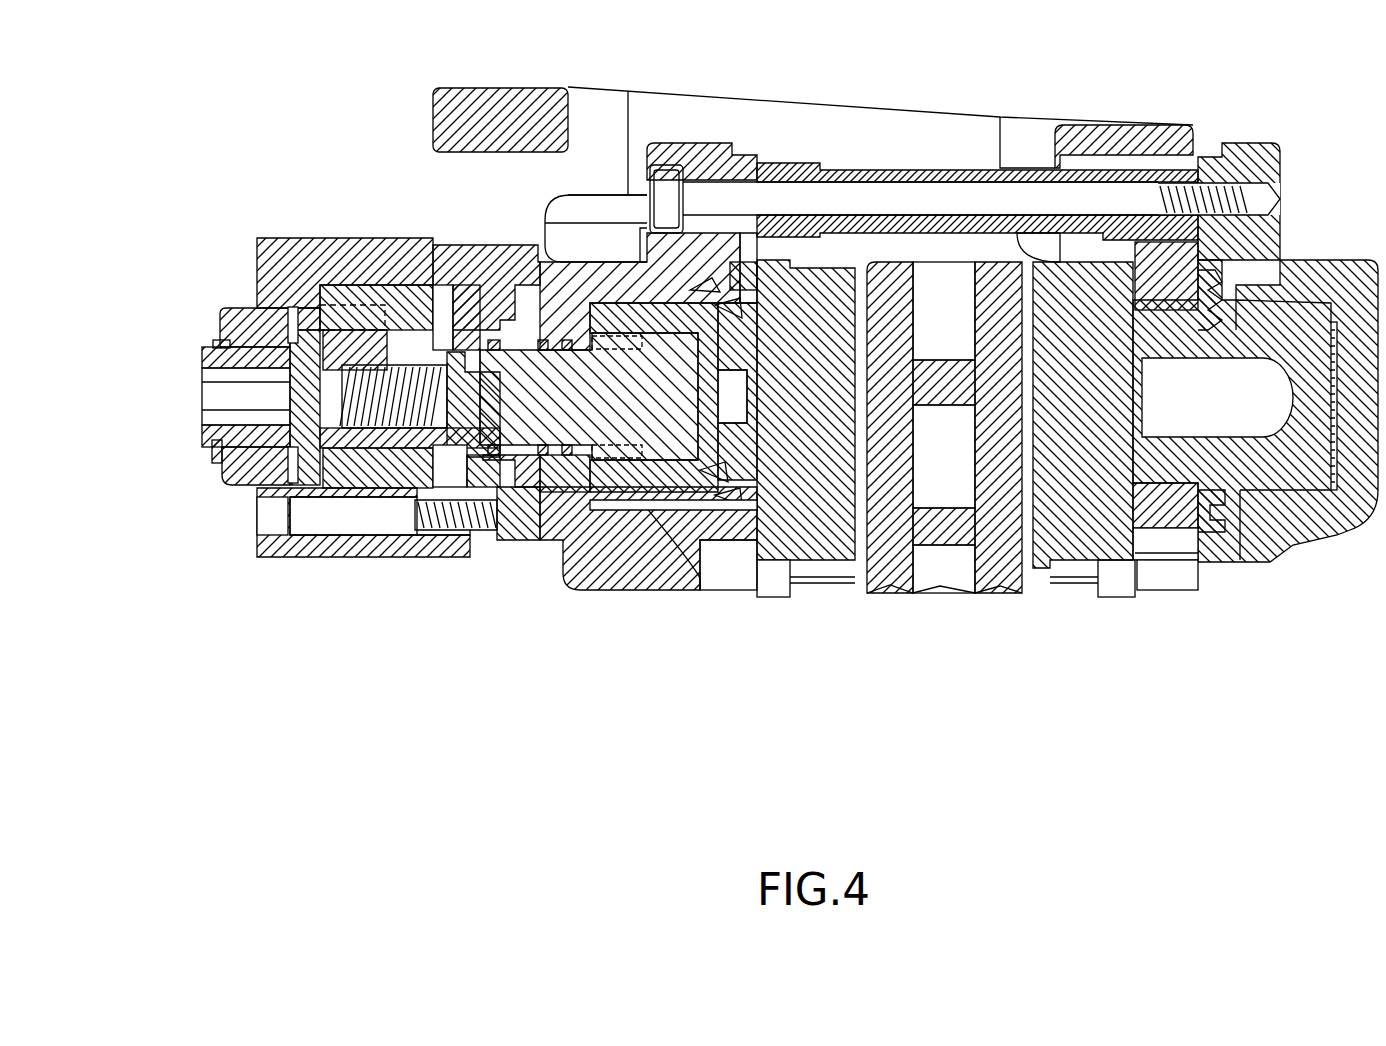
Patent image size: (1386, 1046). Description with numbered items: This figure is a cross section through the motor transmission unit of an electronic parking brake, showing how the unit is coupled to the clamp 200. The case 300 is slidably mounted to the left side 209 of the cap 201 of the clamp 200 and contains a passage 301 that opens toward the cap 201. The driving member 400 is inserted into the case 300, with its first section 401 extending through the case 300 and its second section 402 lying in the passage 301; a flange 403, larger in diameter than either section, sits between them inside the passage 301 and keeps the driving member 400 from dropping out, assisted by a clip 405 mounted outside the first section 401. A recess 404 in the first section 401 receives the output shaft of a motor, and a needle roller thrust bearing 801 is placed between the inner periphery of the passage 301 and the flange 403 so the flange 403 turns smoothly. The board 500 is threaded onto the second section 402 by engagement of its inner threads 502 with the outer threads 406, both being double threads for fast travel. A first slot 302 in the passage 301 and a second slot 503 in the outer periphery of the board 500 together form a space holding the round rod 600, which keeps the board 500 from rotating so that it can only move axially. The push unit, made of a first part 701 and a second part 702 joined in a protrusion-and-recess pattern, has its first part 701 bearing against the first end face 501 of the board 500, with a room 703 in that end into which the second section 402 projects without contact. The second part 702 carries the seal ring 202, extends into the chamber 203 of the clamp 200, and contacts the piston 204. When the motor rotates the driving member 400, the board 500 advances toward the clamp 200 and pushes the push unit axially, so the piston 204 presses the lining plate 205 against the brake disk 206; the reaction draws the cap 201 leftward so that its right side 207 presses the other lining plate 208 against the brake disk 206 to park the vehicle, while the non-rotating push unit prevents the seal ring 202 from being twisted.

The clamp 200 is at (1300, 140).
The cap 201 is at (760, 95).
The seal ring 202 is at (527, 497).
The chamber 203 is at (598, 545).
The piston 204 is at (690, 545).
The lining plate 205 is at (820, 555).
The brake disk 206 is at (1010, 570).
The right side 207 is at (1215, 295).
The lining plate 208 is at (1115, 560).
The left side 209 is at (570, 235).
The case 300 is at (295, 238).
The passage 301 is at (412, 532).
The first slot 302 is at (323, 330).
The driving member 400 is at (185, 425).
The first section 401 is at (240, 330).
The second section 402 is at (455, 352).
The flange 403 is at (300, 505).
The recess 404 is at (210, 375).
The clip 405 is at (205, 450).
The outer threads 406 is at (305, 485).
The board 500 is at (300, 558).
The first end face 501 is at (385, 460).
The inner threads 502 is at (340, 430).
The second slot 503 is at (355, 332).
The rod 600 is at (400, 335).
The first part 701 is at (466, 455).
The second part 702 is at (658, 510).
The room 703 is at (472, 352).
The needle roller thrust bearing 801 is at (280, 475).